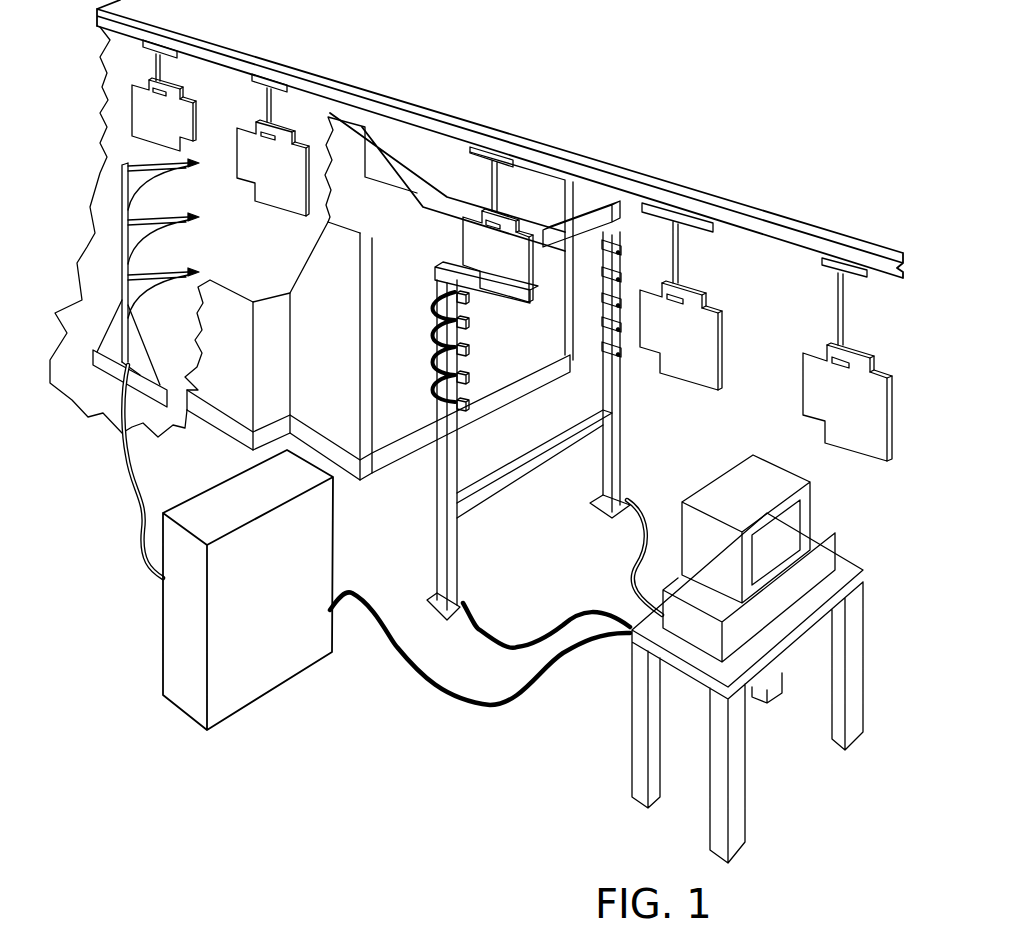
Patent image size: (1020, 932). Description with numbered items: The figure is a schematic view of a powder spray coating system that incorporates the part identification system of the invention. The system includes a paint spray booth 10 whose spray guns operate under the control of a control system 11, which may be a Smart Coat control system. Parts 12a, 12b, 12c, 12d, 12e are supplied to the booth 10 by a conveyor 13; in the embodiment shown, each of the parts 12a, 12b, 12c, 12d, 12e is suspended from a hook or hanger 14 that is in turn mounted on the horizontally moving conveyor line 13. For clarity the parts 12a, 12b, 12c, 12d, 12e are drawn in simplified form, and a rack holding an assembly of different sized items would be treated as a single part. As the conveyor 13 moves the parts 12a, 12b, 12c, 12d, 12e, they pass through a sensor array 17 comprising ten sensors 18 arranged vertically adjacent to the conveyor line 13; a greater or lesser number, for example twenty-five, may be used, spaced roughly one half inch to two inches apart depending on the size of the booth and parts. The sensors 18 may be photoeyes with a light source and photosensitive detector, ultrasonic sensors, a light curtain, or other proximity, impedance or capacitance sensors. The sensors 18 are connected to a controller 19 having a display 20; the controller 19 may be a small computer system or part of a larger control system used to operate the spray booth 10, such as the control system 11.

The paint spray booth 10 is at (228, 387).
The control system 11 is at (265, 650).
The part 12a is at (820, 403).
The part 12b is at (678, 367).
The part 12c is at (472, 247).
The part 12d is at (270, 187).
The part 12e is at (148, 118).
The conveyor 13 is at (730, 207).
The hangers 14 is at (162, 70).
The sensor array 17 is at (487, 413).
The sensors 18 is at (468, 356).
The controller 19 is at (822, 562).
The display 20 is at (793, 518).